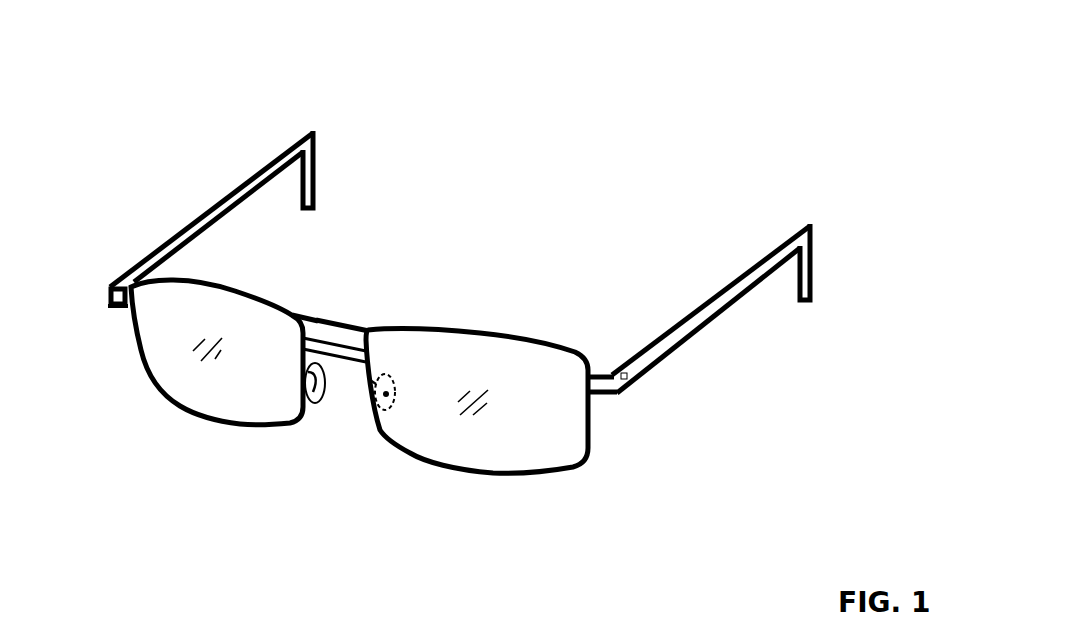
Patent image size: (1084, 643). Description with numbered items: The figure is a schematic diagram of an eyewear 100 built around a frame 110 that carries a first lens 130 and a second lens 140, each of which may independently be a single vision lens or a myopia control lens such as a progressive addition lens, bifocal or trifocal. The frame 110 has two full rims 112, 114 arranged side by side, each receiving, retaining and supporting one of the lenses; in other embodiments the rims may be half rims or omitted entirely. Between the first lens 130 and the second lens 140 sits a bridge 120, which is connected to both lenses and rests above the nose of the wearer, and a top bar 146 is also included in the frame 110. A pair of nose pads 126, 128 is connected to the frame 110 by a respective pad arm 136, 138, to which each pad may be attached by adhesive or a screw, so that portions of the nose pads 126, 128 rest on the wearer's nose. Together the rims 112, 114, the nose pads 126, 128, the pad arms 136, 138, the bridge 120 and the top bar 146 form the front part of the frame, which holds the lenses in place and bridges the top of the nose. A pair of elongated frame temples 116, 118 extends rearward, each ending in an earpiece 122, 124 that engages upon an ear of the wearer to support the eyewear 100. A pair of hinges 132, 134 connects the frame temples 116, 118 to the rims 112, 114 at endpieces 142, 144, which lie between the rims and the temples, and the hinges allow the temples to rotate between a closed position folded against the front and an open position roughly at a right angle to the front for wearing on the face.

The eyewear 100 is at (700, 70).
The frame 110 is at (230, 183).
The rim 112 is at (255, 298).
The rim 114 is at (478, 327).
The frame temple 116 is at (199, 217).
The frame temple 118 is at (705, 307).
The bridge 120 is at (338, 318).
The earpiece 122 is at (320, 177).
The earpiece 124 is at (815, 263).
The nose pad 126 is at (307, 412).
The nose pad 128 is at (373, 422).
The first lens 130 is at (218, 392).
The hinge 132 is at (125, 268).
The hinge 134 is at (633, 383).
The pad arm 136 is at (317, 340).
The pad arm 138 is at (376, 378).
The second lens 140 is at (482, 448).
The endpiece 142 is at (597, 385).
The endpiece 144 is at (112, 312).
The top bar 146 is at (287, 310).